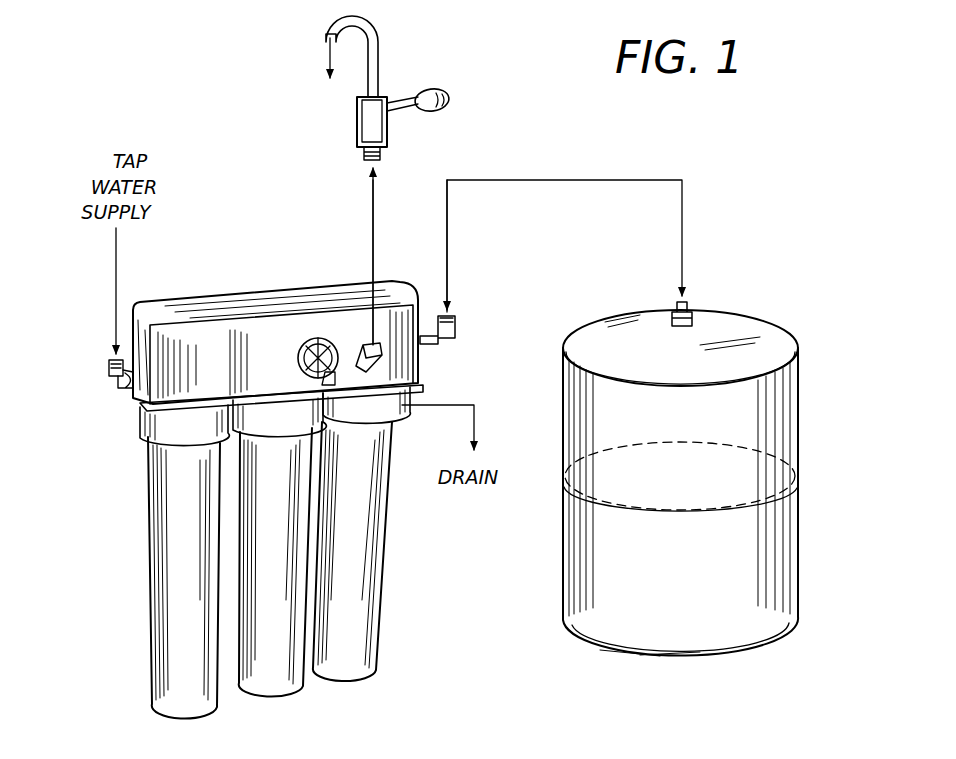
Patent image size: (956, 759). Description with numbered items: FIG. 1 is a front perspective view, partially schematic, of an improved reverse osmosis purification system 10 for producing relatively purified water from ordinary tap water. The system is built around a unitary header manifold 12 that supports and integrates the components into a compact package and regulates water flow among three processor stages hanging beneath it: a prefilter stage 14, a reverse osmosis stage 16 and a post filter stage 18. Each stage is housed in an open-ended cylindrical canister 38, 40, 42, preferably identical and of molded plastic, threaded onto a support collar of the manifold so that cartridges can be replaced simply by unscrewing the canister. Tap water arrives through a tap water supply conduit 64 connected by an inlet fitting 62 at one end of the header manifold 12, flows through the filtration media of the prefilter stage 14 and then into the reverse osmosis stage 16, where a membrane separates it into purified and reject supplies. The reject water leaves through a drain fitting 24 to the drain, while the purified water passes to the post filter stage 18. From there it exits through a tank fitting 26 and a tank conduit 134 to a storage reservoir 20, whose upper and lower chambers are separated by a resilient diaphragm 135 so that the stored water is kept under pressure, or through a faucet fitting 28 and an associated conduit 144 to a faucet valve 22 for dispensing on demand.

The reverse osmosis purification system 10 is at (268, 180).
The header manifold 12 is at (176, 418).
The prefilter stage 14 is at (154, 572).
The reverse osmosis stage 16 is at (267, 566).
The post filter stage 18 is at (376, 555).
The storage reservoir 20 is at (710, 470).
The faucet valve 22 is at (382, 92).
The drain fitting 24 is at (298, 351).
The tank fitting 26 is at (455, 344).
The faucet fitting 28 is at (383, 357).
The cylindrical canister 38 is at (152, 609).
The cylindrical canister 40 is at (260, 654).
The cylindrical canister 42 is at (372, 609).
The inlet fitting 62 is at (112, 378).
The tap water supply conduit 64 is at (116, 283).
The tank conduit 134 is at (555, 180).
The diaphragm 135 is at (805, 441).
The conduit 144 is at (372, 264).